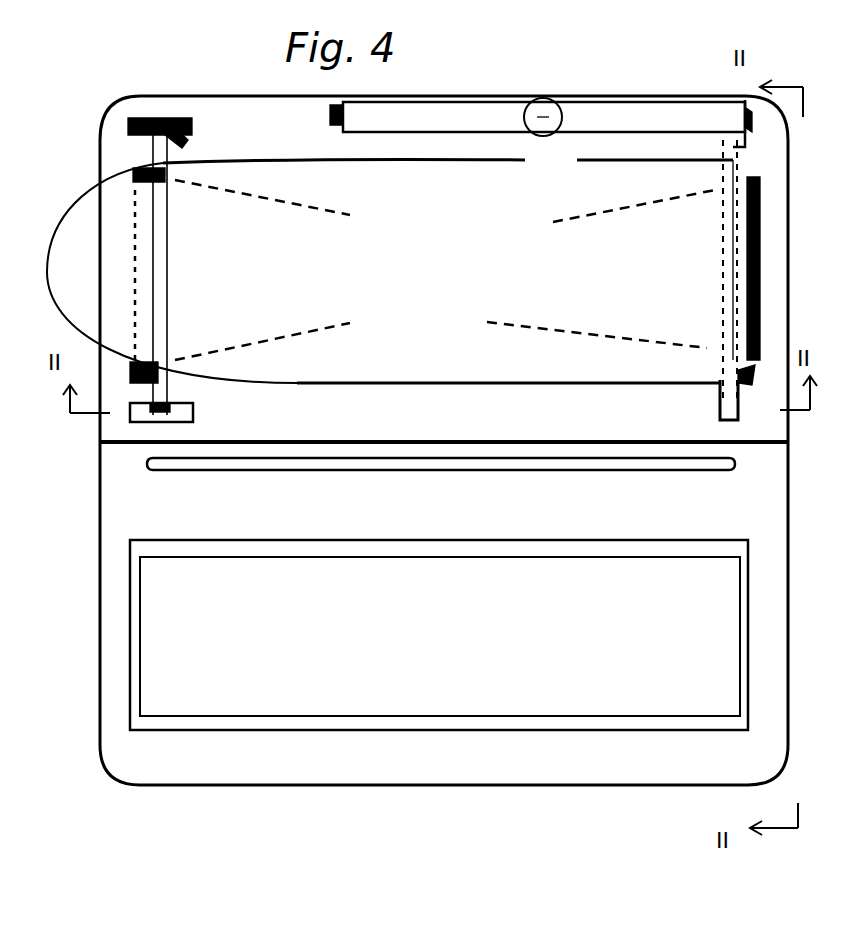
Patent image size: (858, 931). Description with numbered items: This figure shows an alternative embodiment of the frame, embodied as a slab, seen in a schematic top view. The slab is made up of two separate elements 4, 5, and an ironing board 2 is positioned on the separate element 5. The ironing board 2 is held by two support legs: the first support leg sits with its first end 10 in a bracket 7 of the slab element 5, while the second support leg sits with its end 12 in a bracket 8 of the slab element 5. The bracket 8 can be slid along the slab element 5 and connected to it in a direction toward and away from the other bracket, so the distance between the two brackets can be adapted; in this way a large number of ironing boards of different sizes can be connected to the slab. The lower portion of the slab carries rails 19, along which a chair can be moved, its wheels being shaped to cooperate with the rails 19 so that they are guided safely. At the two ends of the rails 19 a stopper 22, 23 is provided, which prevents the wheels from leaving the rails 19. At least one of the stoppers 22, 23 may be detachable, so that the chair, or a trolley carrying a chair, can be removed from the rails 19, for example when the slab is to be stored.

The ironing board 2 is at (410, 348).
The separate element 4 is at (117, 497).
The separate element 5 is at (770, 300).
The bracket 7 is at (728, 147).
The bracket 8 is at (163, 152).
The first end 10 is at (750, 360).
The end 12 is at (160, 277).
The rails 19 is at (610, 555).
The stopper 22 is at (742, 638).
The stopper 23 is at (138, 652).